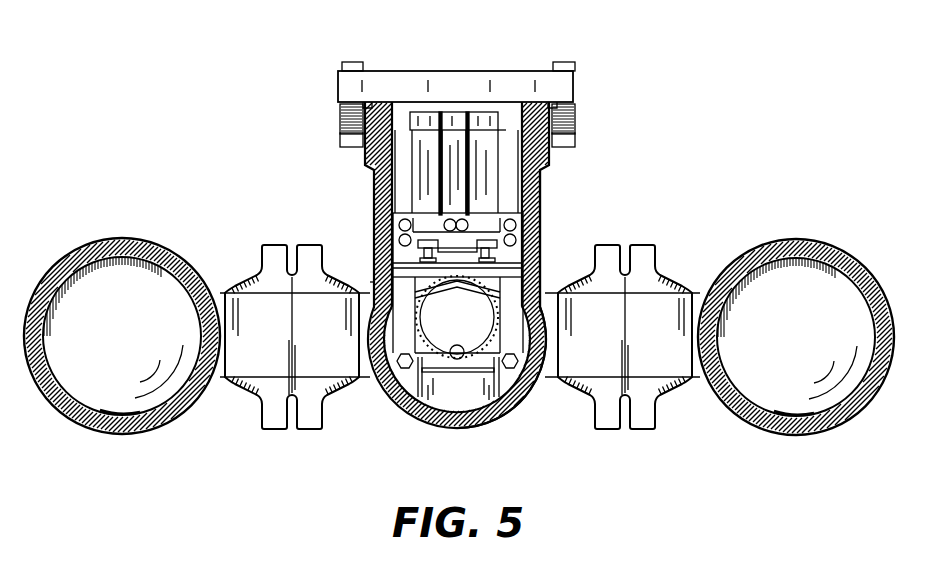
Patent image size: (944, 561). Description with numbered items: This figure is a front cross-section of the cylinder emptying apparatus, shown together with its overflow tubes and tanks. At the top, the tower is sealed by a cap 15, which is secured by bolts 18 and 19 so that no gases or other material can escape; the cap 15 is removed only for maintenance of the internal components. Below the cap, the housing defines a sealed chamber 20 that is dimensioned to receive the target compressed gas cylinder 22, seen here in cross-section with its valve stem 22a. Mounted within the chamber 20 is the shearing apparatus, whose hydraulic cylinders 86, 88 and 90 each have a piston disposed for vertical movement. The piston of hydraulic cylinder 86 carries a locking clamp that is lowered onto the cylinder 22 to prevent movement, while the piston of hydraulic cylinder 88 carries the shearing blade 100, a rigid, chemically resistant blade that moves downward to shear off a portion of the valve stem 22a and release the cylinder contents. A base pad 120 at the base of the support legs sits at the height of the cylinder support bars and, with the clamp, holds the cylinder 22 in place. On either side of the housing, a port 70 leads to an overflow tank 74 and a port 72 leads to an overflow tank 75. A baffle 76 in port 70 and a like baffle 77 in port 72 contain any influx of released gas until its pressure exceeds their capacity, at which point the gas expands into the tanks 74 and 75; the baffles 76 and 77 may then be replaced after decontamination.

The cap 15 is at (528, 80).
The bolt 18 is at (353, 62).
The bolt 19 is at (557, 62).
The chamber 20 is at (411, 199).
The target compressed gas cylinder 22 is at (455, 329).
The valve stem 22a is at (459, 359).
The port 70 is at (376, 398).
The port 72 is at (541, 398).
The overflow tank 74 is at (126, 333).
The overflow tank 75 is at (796, 344).
The baffle 76 is at (292, 308).
The baffle 77 is at (623, 312).
The hydraulic cylinder 86 is at (420, 140).
The hydraulic cylinder 88 is at (457, 137).
The hydraulic cylinder 90 is at (507, 133).
The shearing blade 100 is at (541, 268).
The base pad 120 is at (442, 364).